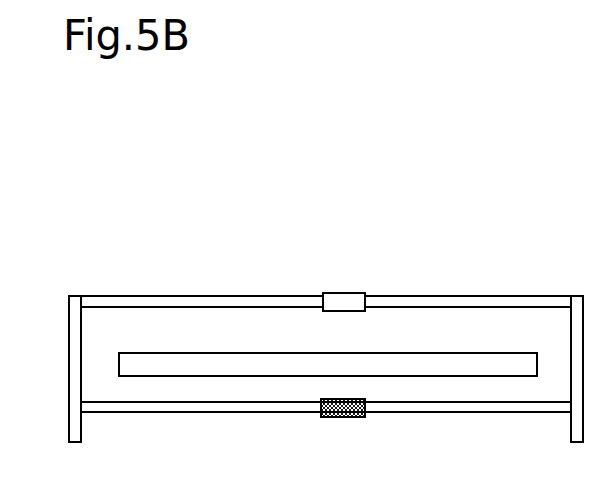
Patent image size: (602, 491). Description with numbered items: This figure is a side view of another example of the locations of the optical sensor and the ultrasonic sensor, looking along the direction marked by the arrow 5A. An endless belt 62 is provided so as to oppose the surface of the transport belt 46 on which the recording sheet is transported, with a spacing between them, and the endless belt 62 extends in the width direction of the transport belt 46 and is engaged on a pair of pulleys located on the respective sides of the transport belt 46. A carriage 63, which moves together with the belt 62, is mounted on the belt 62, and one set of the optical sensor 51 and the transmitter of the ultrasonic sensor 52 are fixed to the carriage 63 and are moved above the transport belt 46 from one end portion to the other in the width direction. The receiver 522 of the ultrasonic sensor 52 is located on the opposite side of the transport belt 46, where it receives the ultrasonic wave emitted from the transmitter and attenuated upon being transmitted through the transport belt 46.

The endless belt 62 is at (98, 296).
The optical sensor 51 is at (347, 269).
The carriage 63 is at (335, 293).
The view direction of Fig. 5A is at (373, 291).
The transport belt 46 is at (519, 353).
The receiver 522 is at (365, 440).
The ultrasonic sensor 52 is at (345, 417).